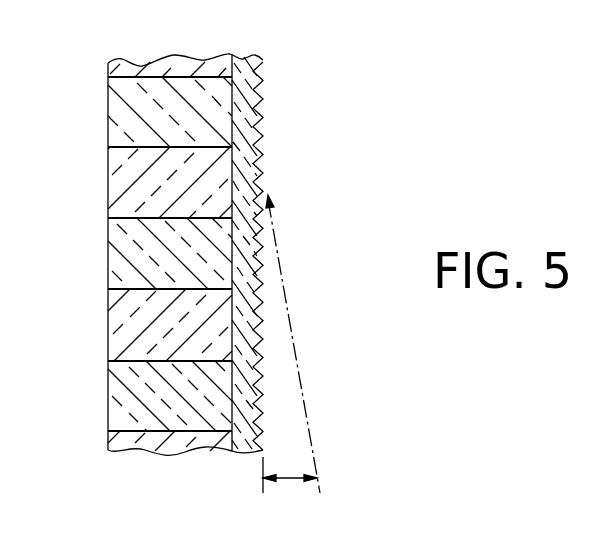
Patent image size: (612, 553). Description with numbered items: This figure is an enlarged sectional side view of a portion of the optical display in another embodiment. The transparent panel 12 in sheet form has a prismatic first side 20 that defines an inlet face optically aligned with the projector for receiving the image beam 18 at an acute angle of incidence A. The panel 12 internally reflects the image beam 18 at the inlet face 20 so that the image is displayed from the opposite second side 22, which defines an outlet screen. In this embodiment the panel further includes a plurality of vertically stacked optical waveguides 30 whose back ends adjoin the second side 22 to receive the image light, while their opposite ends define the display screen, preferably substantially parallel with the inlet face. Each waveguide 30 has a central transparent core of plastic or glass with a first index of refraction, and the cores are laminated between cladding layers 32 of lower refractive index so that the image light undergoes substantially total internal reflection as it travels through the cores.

The panel 12 is at (168, 229).
The image beam 18 is at (304, 398).
The prismatic first side 20 is at (265, 100).
The second side 22 is at (210, 105).
The optical waveguides 30 is at (108, 262).
The cladding layers 32 is at (108, 431).
The angle of incidence A is at (287, 480).